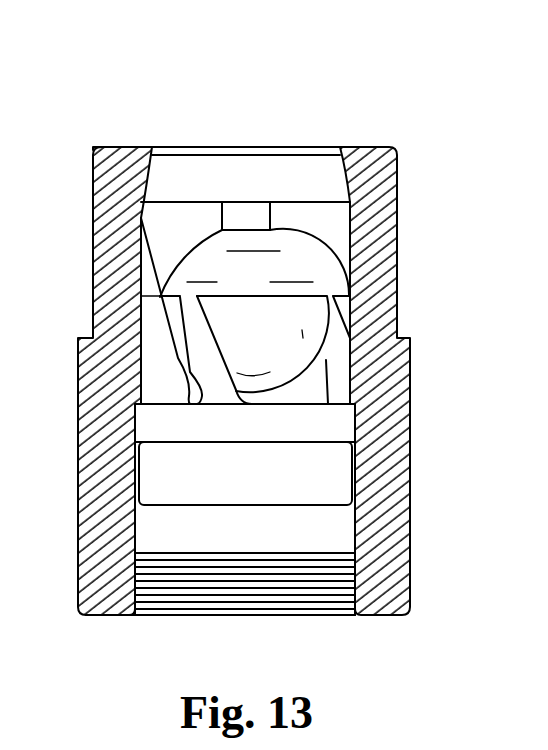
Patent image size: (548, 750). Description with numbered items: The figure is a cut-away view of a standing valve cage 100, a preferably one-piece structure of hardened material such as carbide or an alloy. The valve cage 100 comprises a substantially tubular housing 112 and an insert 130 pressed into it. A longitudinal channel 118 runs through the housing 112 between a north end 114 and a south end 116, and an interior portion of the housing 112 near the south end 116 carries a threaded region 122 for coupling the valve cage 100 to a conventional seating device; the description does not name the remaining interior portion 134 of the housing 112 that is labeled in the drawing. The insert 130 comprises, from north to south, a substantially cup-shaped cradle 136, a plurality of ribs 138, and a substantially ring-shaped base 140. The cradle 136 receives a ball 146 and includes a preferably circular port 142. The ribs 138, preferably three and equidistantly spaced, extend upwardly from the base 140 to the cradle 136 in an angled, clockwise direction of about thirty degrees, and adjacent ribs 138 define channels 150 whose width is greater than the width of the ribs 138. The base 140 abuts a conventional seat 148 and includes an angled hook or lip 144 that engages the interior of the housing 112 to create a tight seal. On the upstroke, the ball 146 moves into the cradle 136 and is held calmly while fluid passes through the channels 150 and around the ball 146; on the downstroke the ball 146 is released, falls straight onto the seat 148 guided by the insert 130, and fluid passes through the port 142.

The valve cage 100 is at (173, 60).
The housing 112 is at (398, 184).
The north end 114 is at (97, 146).
The south end 116 is at (79, 617).
The longitudinal channel 118 is at (326, 620).
The threaded region 122 is at (247, 560).
The insert 130 is at (158, 333).
The bore 134 is at (360, 454).
The cradle 136 is at (313, 265).
The ribs 138 is at (190, 306).
The base 140 is at (145, 423).
The port 142 is at (247, 215).
The lip 144 is at (160, 398).
The ball 146 is at (317, 318).
The seat 148 is at (330, 488).
The channels 150 is at (165, 372).